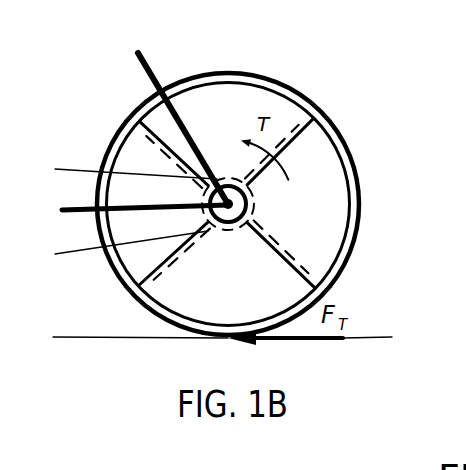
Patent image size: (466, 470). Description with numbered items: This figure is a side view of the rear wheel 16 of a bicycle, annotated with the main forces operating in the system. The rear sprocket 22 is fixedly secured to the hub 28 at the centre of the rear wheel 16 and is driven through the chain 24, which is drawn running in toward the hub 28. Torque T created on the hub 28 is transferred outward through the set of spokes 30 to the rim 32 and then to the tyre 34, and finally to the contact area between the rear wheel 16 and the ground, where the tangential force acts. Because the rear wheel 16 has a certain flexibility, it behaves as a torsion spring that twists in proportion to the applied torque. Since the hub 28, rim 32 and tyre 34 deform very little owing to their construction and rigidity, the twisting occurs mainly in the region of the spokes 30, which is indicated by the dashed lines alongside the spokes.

The rear wheel 16 is at (230, 204).
The rear sprocket 22 is at (255, 212).
The chain 24 is at (73, 256).
The hub 28 is at (250, 192).
The set of spokes 30 is at (187, 248).
The rim 32 is at (353, 177).
The tyre 34 is at (332, 117).